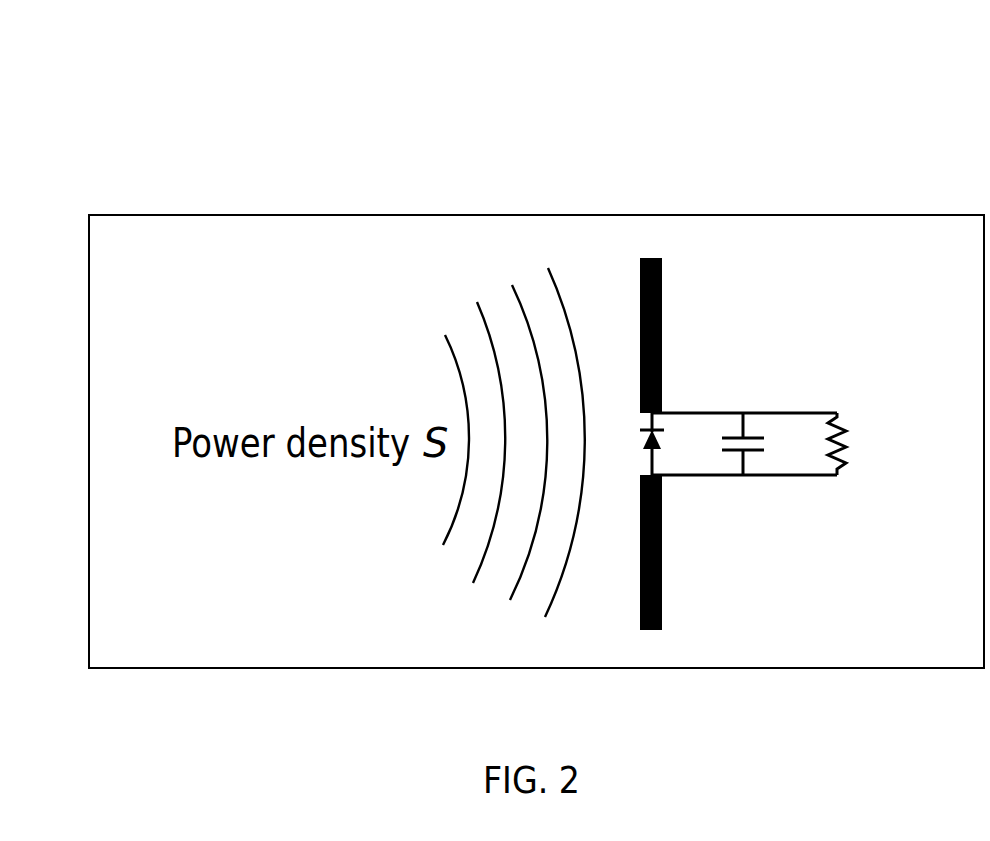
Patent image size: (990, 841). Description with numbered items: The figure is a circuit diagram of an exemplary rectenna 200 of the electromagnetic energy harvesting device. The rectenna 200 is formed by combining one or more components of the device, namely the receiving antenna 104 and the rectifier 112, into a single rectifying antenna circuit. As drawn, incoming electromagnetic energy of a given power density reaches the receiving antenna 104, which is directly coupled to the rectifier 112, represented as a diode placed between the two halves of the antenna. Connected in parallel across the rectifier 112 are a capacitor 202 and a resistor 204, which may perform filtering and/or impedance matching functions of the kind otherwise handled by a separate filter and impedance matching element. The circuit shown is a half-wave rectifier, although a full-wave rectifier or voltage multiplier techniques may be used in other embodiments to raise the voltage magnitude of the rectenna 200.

The rectenna 200 is at (905, 108).
The receiving antenna 104 is at (651, 258).
The rectifier 112 is at (645, 450).
The capacitor 202 is at (752, 437).
The resistor 204 is at (841, 420).